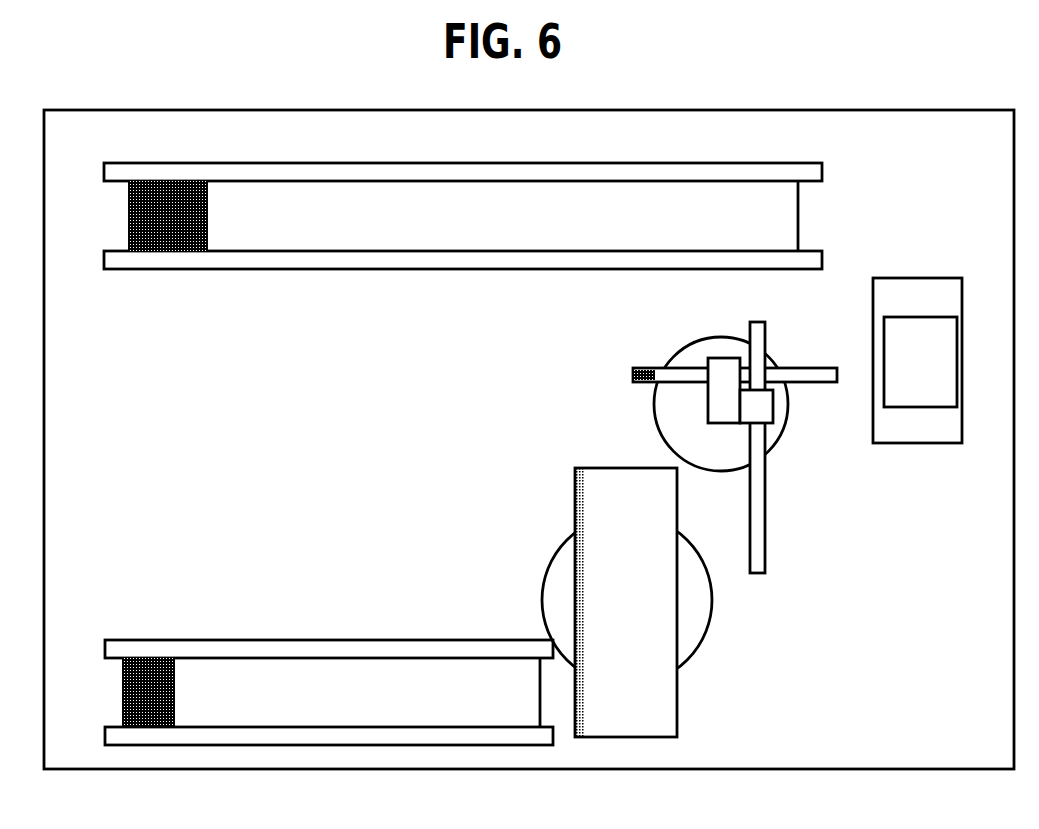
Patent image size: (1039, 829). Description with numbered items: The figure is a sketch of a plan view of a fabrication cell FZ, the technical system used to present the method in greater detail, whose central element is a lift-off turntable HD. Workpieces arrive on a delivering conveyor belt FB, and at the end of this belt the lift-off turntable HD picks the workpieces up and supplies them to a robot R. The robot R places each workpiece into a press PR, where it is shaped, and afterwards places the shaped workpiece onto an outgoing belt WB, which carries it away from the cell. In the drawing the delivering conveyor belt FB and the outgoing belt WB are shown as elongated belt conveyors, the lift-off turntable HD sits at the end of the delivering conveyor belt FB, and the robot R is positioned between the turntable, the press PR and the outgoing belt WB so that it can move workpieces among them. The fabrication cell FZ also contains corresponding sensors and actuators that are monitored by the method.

The fabrication cell FZ is at (665, 140).
The outgoing belt WB is at (332, 217).
The delivering conveyor belt FB is at (190, 667).
The lift-off turntable HD is at (683, 632).
The robot R is at (677, 368).
The press PR is at (923, 423).